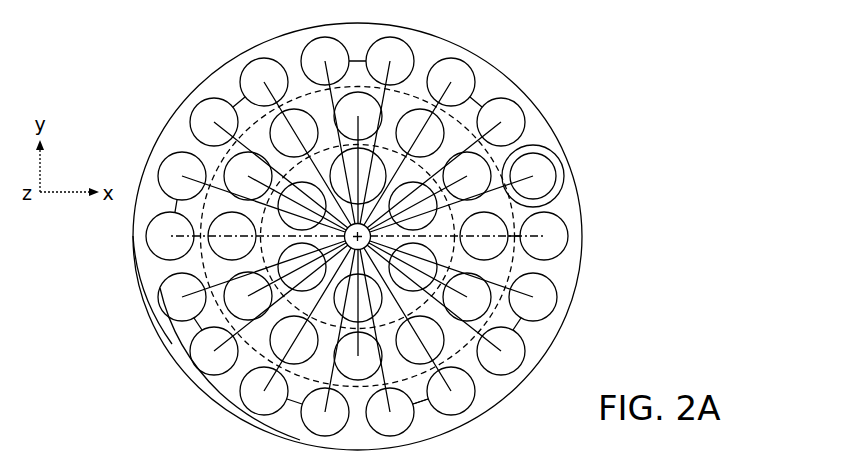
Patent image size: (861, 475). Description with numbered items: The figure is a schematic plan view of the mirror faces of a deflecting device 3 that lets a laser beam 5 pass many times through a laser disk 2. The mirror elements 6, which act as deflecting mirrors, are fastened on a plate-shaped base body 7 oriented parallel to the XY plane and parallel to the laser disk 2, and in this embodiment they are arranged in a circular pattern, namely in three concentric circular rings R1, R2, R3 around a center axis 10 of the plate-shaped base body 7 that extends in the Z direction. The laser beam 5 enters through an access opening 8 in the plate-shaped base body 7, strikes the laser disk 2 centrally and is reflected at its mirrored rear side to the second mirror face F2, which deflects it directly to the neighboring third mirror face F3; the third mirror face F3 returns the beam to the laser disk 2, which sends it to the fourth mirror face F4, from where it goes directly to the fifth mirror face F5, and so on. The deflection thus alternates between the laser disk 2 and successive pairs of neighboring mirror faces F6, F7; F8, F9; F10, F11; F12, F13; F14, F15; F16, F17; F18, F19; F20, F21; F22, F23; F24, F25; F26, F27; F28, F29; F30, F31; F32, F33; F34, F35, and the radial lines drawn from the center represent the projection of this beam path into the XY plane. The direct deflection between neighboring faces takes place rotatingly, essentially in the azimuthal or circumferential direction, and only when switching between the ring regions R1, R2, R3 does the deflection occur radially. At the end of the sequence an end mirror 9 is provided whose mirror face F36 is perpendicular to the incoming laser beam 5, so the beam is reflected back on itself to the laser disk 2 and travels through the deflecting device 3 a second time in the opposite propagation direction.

The laser disk 2 is at (160, 288).
The deflecting device 3 is at (556, 87).
The laser beam 5 is at (293, 397).
The mirror elements 6 is at (419, 437).
The plate-shaped base body 7 is at (220, 393).
The access opening 8 is at (373, 152).
The end mirror 9 is at (574, 158).
The center axis 10 is at (318, 88).
The first circular ring R1 is at (292, 166).
The second circular ring R2 is at (207, 265).
The third circular ring R3 is at (172, 344).
The second mirror face F2 is at (358, 298).
The third mirror face F3 is at (302, 267).
The fourth mirror face F4 is at (413, 206).
The fifth mirror face F5 is at (413, 267).
The sixth mirror face F6 is at (302, 206).
The seventh mirror face F7 is at (248, 176).
The eighth mirror face F8 is at (467, 297).
The ninth mirror face F9 is at (420, 340).
The tenth mirror face F10 is at (294, 133).
The eleventh mirror face F11 is at (358, 116).
The twelfth mirror face F12 is at (358, 356).
The thirteenth mirror face F13 is at (294, 340).
The fourteenth mirror face F14 is at (420, 133).
The fifteenth mirror face F15 is at (467, 176).
The sixteenth mirror face F16 is at (248, 296).
The seventeenth mirror face F17 is at (232, 236).
The eighteenth mirror face F18 is at (484, 236).
The nineteenth mirror face F19 is at (544, 236).
The twentieth mirror face F20 is at (170, 236).
The twenty-first mirror face F21 is at (182, 176).
The twenty-second mirror face F22 is at (533, 297).
The twenty-third mirror face F23 is at (501, 351).
The twenty-fourth mirror face F24 is at (214, 122).
The twenty-fifth mirror face F25 is at (264, 82).
The twenty-sixth mirror face F26 is at (451, 391).
The twenty-seventh mirror face F27 is at (390, 412).
The twenty-eighth mirror face F28 is at (325, 61).
The twenty-ninth mirror face F29 is at (390, 61).
The thirtieth mirror face F30 is at (325, 412).
The thirty-first mirror face F31 is at (264, 391).
The thirty-second mirror face F32 is at (451, 82).
The thirty-third mirror face F33 is at (501, 122).
The thirty-fourth mirror face F34 is at (214, 351).
The thirty-fifth mirror face F35 is at (182, 297).
The mirror face of end mirror F36 is at (533, 176).